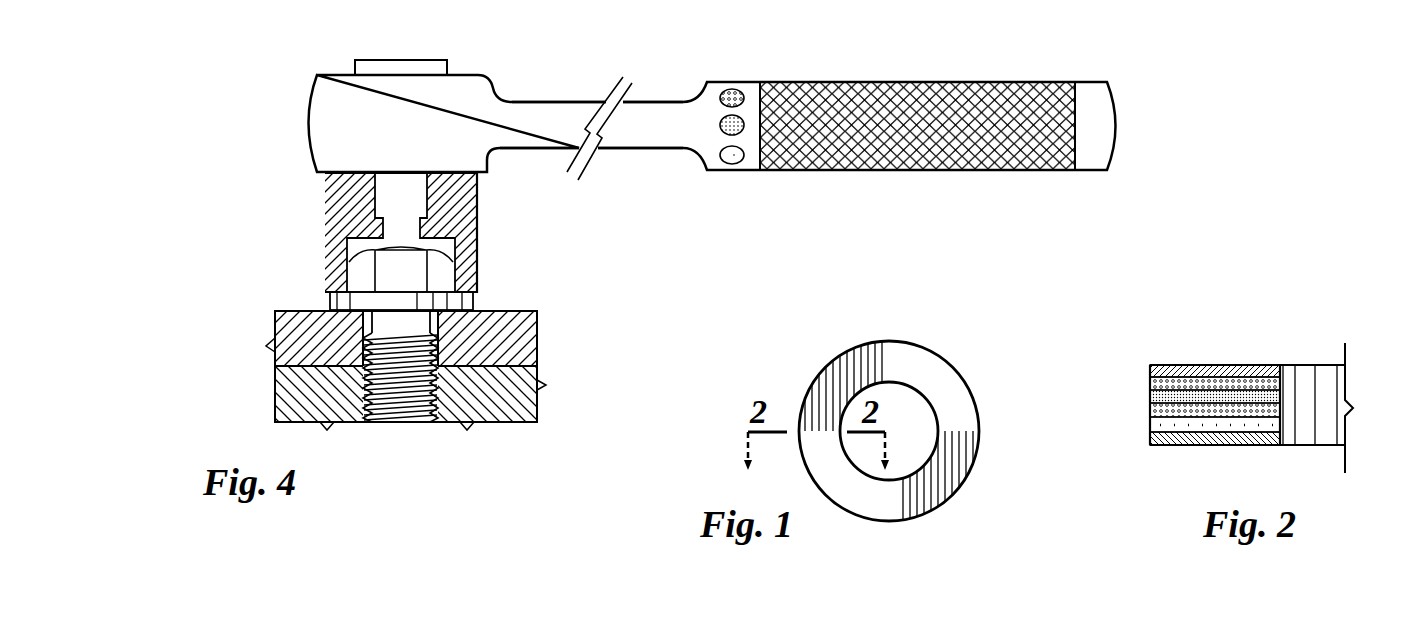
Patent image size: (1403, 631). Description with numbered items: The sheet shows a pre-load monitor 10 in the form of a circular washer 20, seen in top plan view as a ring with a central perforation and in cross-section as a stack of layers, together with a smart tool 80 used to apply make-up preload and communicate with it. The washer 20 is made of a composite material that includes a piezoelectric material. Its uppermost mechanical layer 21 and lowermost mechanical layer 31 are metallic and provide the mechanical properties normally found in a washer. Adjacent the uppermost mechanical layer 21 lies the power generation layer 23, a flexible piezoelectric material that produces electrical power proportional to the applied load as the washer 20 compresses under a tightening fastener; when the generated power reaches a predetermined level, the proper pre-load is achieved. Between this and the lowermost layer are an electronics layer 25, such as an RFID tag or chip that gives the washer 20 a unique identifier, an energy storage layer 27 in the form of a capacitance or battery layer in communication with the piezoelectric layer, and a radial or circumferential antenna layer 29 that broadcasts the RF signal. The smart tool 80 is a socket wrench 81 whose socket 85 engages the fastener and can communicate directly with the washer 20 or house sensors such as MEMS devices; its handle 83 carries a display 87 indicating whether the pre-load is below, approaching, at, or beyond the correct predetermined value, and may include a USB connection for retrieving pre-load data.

In FIG. 1, the pre-load monitor 10 is at (897, 420).
In FIG. 4, the washer 20 is at (330, 297).
In FIG. 1, the washer 20 is at (828, 365).
In FIG. 1, the uppermost mechanical layer 21 is at (872, 498).
In FIG. 2, the uppermost mechanical layer 21 is at (1203, 366).
In FIG. 2, the power generation layer 23 is at (1150, 387).
In FIG. 2, the electronics layer 25 is at (1150, 400).
In FIG. 2, the energy storage layer 27 is at (1150, 413).
In FIG. 2, the antenna layer 29 is at (1150, 430).
In FIG. 2, the lowermost mechanical layer 31 is at (1178, 446).
In FIG. 4, the smart tool 80 is at (674, 126).
In FIG. 4, the socket wrench 81 is at (527, 102).
In FIG. 4, the handle 83 is at (837, 172).
In FIG. 4, the socket 85 is at (480, 232).
In FIG. 4, the display 87 is at (712, 141).